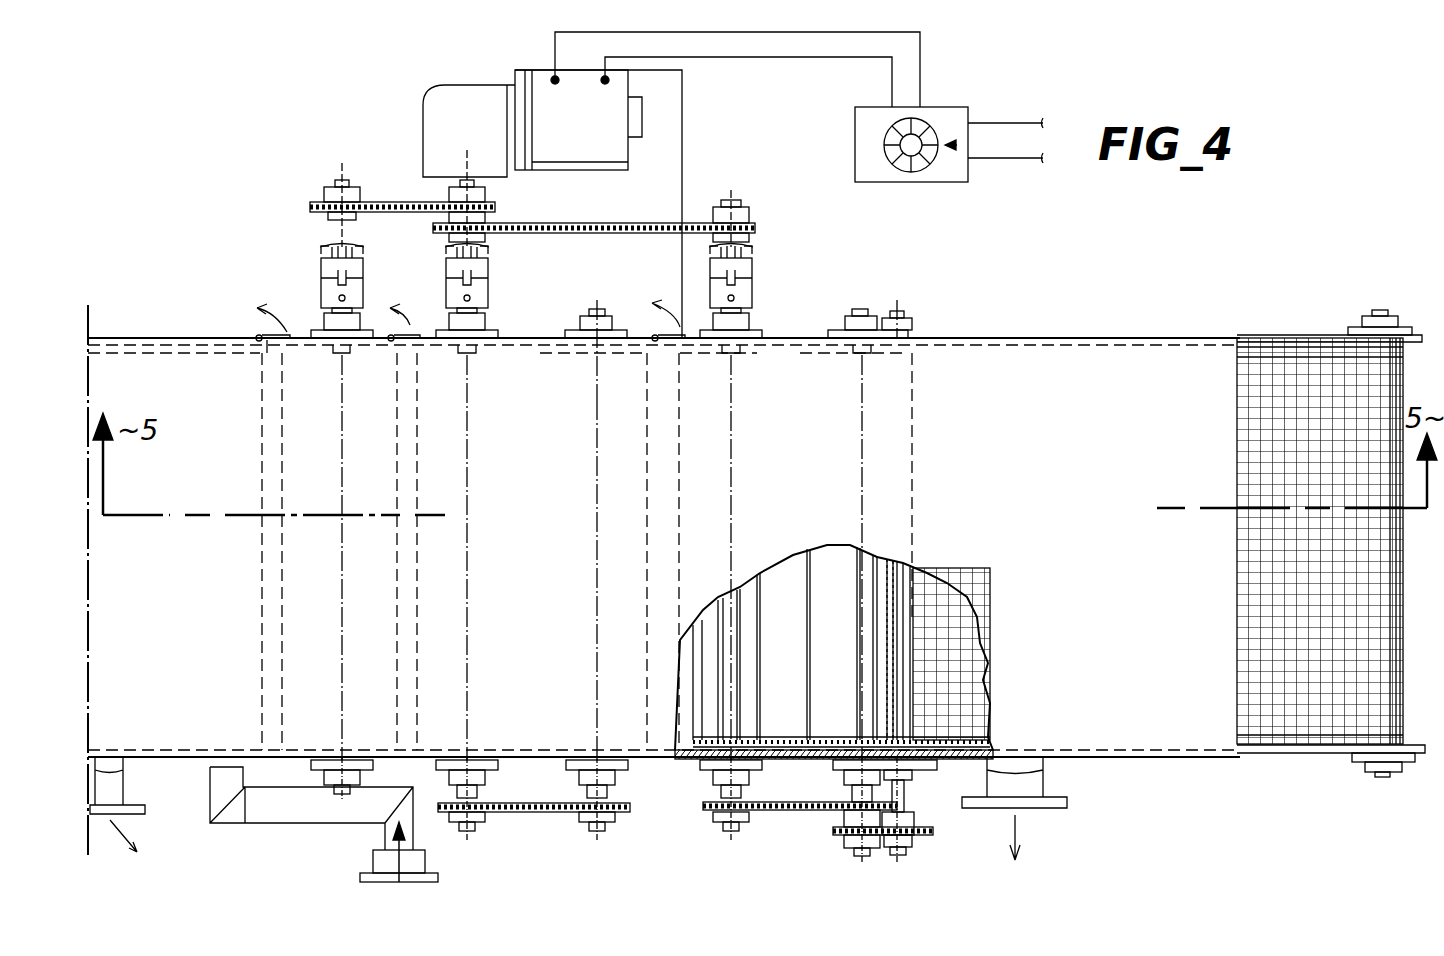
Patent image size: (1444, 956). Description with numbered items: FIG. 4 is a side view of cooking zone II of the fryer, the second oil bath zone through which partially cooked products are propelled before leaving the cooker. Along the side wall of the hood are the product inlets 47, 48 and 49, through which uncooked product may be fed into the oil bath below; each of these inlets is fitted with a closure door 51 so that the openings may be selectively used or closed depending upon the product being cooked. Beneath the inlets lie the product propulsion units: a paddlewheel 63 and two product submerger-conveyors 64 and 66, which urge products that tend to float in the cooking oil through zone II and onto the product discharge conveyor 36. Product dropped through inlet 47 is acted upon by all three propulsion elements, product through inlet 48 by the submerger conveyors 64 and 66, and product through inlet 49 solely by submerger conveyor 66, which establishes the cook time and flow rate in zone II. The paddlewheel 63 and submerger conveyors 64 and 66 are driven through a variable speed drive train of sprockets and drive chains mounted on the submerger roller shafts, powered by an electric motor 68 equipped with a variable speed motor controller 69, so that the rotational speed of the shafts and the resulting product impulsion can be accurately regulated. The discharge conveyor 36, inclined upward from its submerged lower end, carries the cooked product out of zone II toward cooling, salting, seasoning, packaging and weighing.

The product discharge conveyor 36 is at (1303, 358).
The product inlet 47 is at (267, 347).
The product inlet 48 is at (395, 342).
The product inlet 49 is at (670, 338).
The closure door 51 is at (270, 335).
The paddlewheel 63 is at (388, 600).
The product submerger-conveyor 64 is at (547, 343).
The product submerger-conveyor 66 is at (797, 357).
The electric motor 68 is at (593, 153).
The variable speed motor controller 69 is at (952, 170).